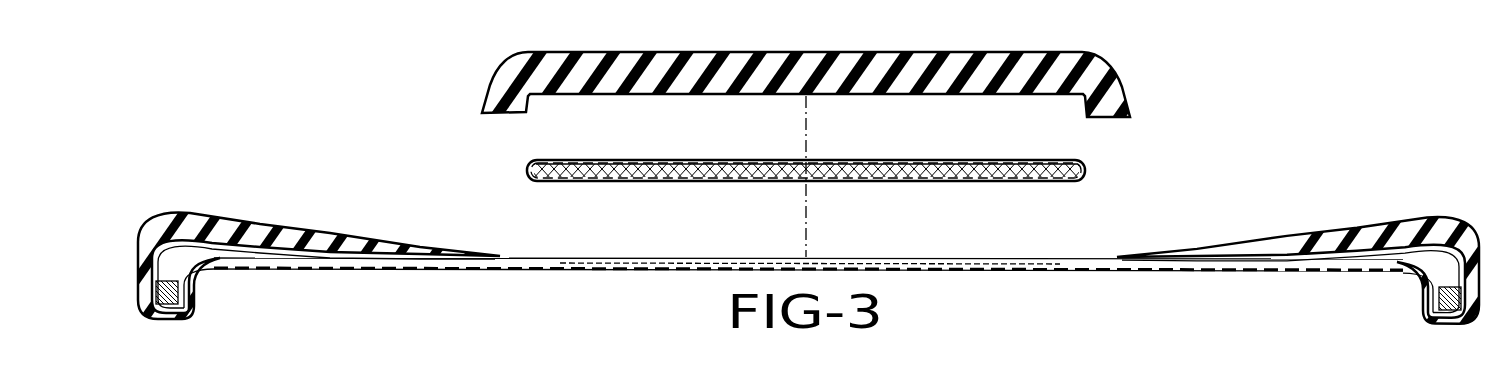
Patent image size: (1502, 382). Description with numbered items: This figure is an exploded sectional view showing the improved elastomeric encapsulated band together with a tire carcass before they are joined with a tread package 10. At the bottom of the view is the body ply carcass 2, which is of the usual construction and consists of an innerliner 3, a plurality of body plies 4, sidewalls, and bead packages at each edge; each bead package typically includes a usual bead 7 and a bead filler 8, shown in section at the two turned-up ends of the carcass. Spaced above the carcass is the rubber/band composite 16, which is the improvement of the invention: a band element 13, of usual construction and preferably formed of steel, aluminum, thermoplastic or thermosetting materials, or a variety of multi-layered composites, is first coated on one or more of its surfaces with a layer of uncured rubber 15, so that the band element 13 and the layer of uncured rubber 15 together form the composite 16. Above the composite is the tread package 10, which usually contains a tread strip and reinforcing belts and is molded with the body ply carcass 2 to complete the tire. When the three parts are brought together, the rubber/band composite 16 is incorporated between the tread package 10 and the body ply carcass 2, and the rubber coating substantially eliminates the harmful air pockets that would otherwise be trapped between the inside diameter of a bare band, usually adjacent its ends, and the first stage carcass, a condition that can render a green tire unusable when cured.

The body ply carcass 2 is at (248, 210).
The innerliner 3 is at (568, 269).
The body plies 4 is at (752, 258).
The bead 7 is at (163, 297).
The bead filler 8 is at (1405, 252).
The tread package 10 is at (595, 62).
The band element 13 is at (628, 173).
The layer of uncured rubber 15 is at (648, 162).
The rubber/band composite 16 is at (853, 173).